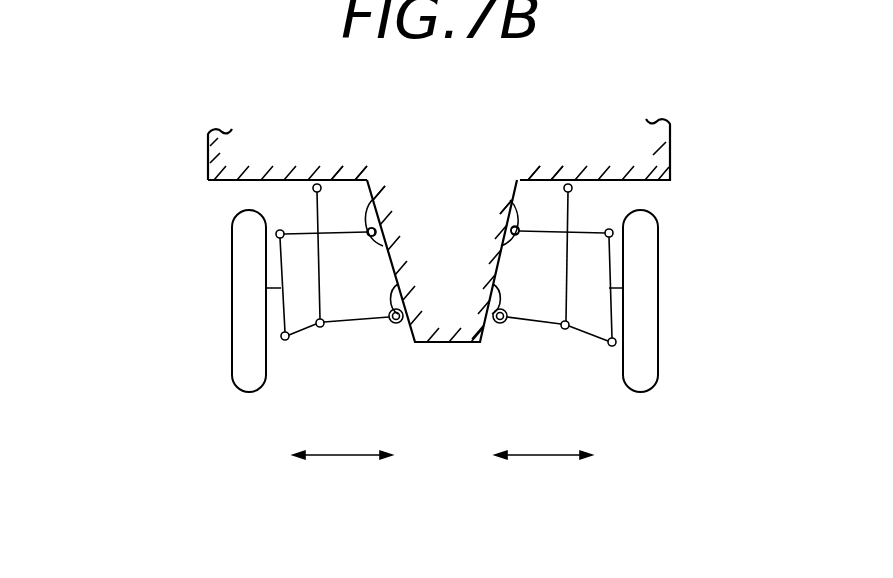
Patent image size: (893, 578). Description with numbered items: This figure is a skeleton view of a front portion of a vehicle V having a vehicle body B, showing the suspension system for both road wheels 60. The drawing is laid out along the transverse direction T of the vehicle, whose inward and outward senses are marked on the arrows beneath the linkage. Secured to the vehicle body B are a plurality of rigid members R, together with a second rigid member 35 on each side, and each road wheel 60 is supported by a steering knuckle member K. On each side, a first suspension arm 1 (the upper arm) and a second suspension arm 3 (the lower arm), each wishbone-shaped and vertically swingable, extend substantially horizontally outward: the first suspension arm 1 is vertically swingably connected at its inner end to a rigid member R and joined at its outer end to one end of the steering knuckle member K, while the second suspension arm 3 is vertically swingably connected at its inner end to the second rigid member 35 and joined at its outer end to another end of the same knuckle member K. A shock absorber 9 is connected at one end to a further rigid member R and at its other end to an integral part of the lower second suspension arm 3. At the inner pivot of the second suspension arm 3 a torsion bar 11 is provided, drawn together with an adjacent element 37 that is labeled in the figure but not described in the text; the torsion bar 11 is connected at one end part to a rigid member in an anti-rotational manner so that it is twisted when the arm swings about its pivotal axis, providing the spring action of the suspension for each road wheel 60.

The first suspension arm 1 is at (350, 236).
The second suspension arm 3 is at (340, 333).
The shock absorber 9 is at (312, 205).
The torsion bar 11 is at (398, 326).
The second rigid member 35 is at (398, 285).
The bushing 37 is at (392, 326).
The road wheel 60 is at (232, 315).
The steering knuckle member K is at (279, 252).
The rigid member R is at (328, 183).
The vehicle V is at (208, 143).
The vehicle body B is at (672, 135).
The transverse direction T is at (346, 460).